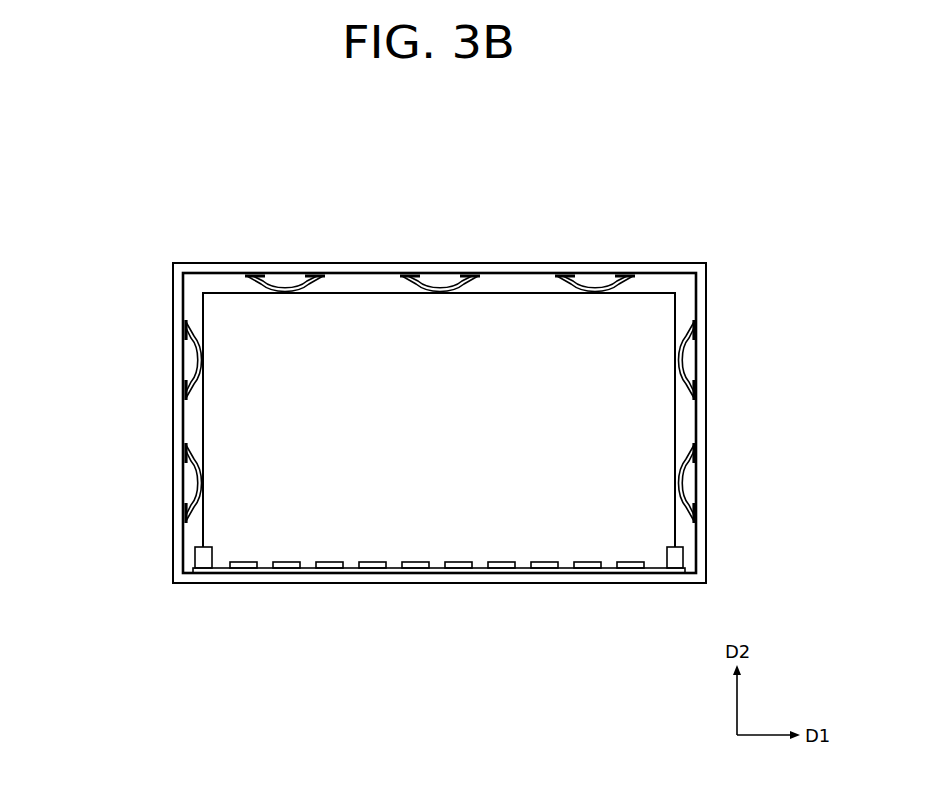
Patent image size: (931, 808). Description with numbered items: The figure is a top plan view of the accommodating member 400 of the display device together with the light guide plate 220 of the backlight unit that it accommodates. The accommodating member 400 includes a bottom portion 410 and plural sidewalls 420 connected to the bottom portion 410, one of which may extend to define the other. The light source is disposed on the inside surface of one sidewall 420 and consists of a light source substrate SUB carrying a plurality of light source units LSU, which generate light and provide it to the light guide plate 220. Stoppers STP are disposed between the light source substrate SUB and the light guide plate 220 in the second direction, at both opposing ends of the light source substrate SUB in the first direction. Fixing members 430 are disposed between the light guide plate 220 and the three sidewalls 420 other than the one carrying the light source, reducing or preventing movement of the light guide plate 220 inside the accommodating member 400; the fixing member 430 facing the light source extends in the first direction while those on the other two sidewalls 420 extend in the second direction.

The accommodating member 400 is at (90, 268).
The sidewall 420 is at (178, 278).
The bottom portion 410 is at (187, 310).
The fixing member 430 is at (290, 292).
The light guide plate 220 is at (208, 413).
The stopper STP is at (201, 568).
The light source unit LSU is at (245, 568).
The light source substrate SUB is at (290, 573).